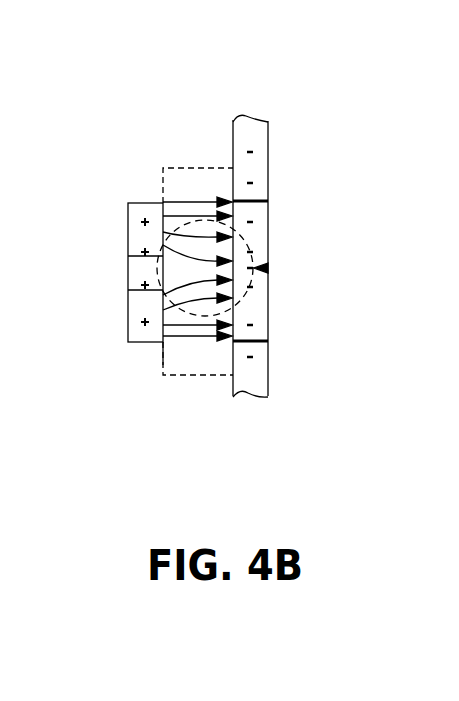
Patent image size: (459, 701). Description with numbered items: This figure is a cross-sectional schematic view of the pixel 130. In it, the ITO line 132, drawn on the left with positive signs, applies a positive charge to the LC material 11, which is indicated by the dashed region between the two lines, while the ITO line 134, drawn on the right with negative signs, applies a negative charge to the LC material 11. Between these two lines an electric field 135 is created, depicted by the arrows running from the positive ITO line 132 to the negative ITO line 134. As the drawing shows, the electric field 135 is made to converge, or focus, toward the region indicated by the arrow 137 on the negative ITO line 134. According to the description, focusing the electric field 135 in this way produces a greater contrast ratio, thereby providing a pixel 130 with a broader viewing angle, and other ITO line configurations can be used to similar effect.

The pixel 130 is at (108, 35).
The LC material 11 is at (198, 168).
The ITO line 132 is at (128, 230).
The ITO line 134 is at (268, 145).
The electric field 135 is at (188, 338).
The arrow 137 is at (268, 268).